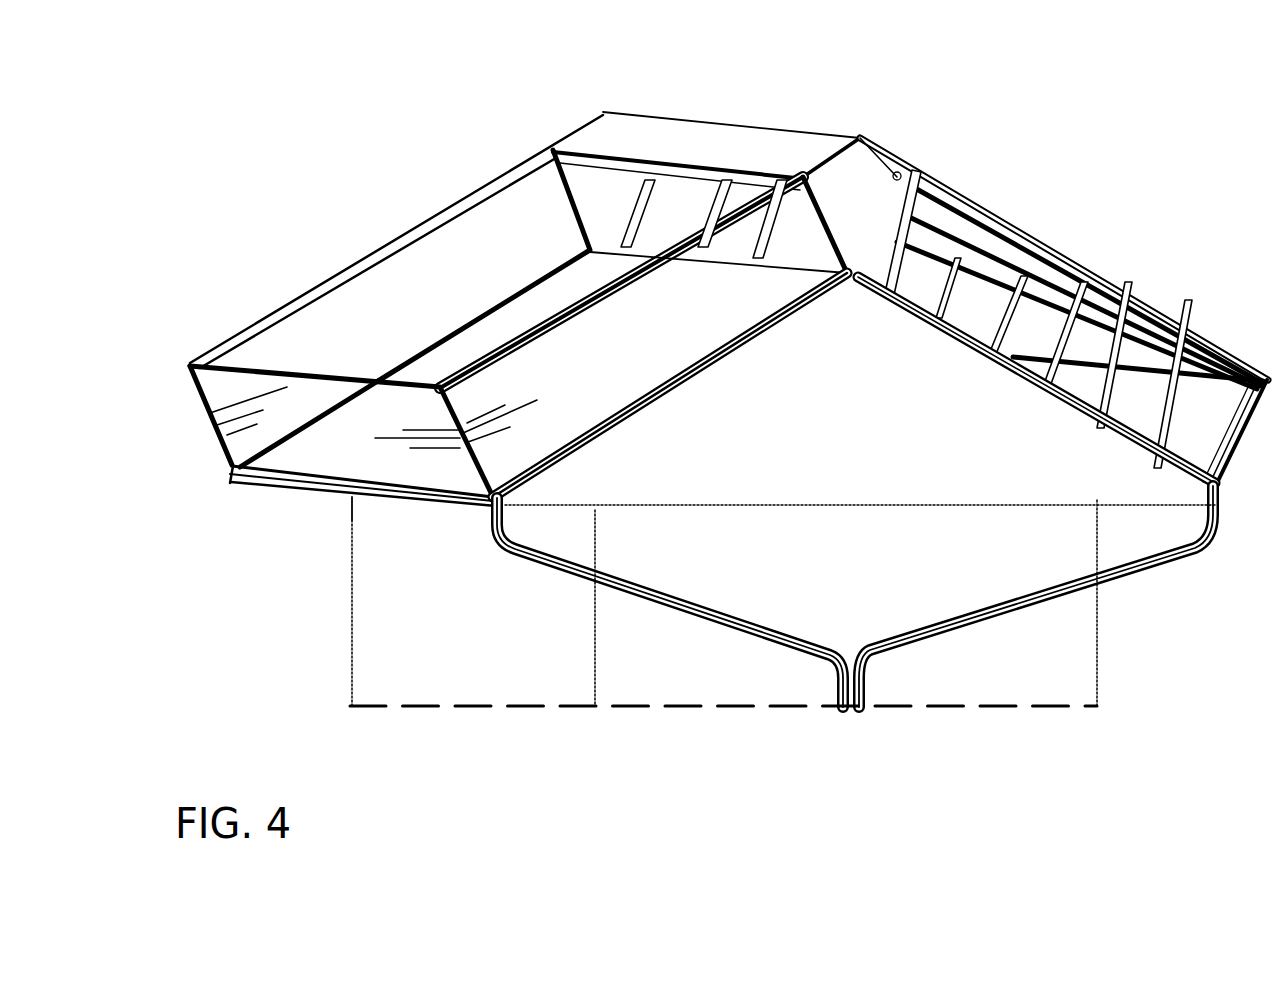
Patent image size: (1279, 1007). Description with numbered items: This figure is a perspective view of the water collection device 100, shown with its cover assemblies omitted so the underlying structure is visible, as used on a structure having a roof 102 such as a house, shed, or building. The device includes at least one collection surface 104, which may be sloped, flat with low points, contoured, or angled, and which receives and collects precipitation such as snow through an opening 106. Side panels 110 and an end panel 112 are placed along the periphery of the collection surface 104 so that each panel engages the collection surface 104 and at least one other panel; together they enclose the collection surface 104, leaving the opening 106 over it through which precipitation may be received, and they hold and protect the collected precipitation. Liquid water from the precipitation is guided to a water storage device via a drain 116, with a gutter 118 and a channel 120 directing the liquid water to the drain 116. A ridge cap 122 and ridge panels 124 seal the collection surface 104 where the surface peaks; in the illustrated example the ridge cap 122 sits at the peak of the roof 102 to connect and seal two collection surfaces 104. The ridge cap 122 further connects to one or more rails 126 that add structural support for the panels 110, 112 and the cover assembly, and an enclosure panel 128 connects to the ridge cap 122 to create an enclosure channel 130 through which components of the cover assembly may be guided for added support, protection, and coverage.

The water collection device 100 is at (692, 405).
The roof 102 is at (1058, 483).
The collection surface 104 is at (463, 353).
The opening 106 is at (480, 253).
The side panel 110 is at (303, 338).
The end panel 112 is at (370, 450).
The drain 116 is at (1042, 598).
The gutter 118 is at (270, 487).
The channel 120 is at (727, 355).
The ridge cap 122 is at (696, 145).
The ridge panel 124 is at (847, 213).
The rail 126 is at (207, 358).
The enclosure panel 128 is at (716, 180).
The enclosure channel 130 is at (593, 161).